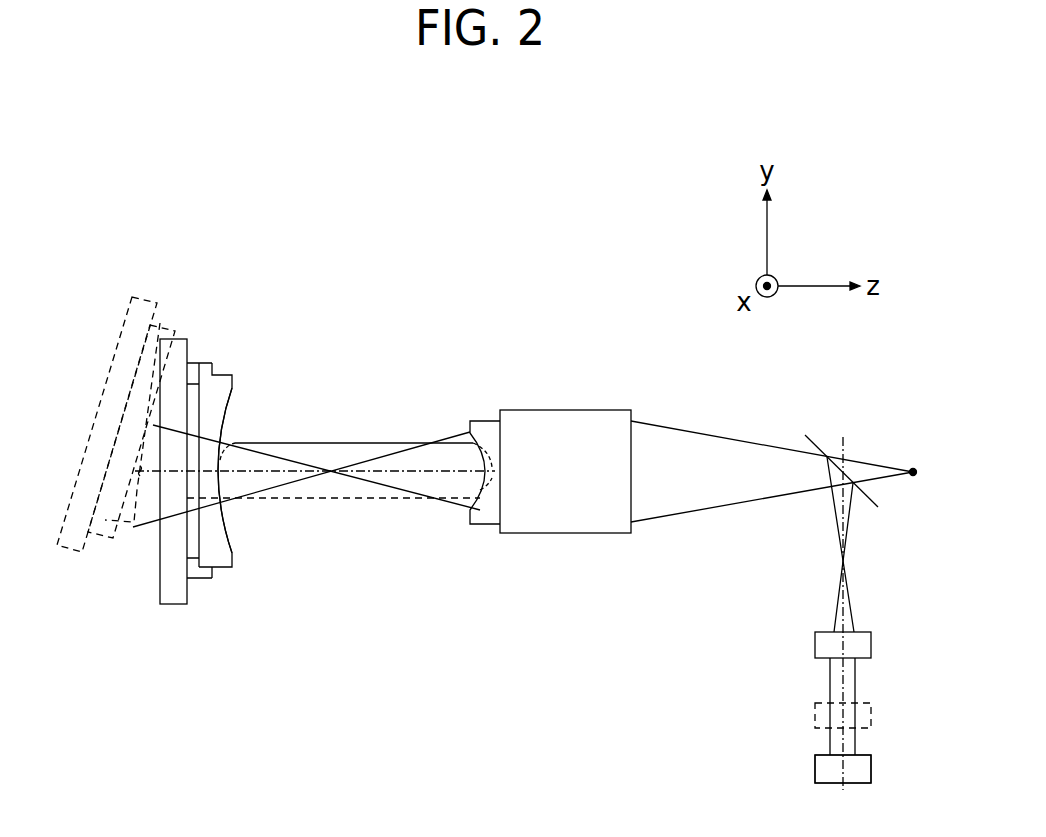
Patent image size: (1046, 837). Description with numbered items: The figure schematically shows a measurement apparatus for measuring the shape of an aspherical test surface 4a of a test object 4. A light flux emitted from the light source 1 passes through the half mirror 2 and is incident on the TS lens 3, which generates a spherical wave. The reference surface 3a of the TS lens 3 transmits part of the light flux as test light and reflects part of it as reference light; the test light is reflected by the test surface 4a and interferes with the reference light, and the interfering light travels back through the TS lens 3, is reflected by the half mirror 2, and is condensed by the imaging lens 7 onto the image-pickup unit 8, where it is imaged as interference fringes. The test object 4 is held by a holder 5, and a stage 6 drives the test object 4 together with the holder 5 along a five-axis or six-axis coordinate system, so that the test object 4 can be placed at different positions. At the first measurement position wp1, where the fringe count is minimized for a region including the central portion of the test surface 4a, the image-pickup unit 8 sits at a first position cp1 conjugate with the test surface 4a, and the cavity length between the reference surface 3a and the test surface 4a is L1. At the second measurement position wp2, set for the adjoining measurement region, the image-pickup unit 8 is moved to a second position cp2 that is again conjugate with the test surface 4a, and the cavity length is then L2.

The light source 1 is at (914, 469).
The half mirror 2 is at (812, 433).
The TS lens 3 is at (550, 420).
The reference surface 3a is at (483, 510).
The test object 4 is at (222, 378).
The test surface 4a is at (226, 410).
The holder 5 is at (205, 363).
The stage 6 is at (170, 604).
The imaging lens 7 is at (871, 645).
The image-pickup unit 8 is at (871, 770).
The cavity length at the first measurement position L1 is at (340, 443).
The cavity length at the second measurement position L2 is at (302, 498).
The first measurement position wp1 is at (209, 585).
The second measurement position wp2 is at (93, 562).
The first position cp1 is at (815, 774).
The second position cp2 is at (815, 722).